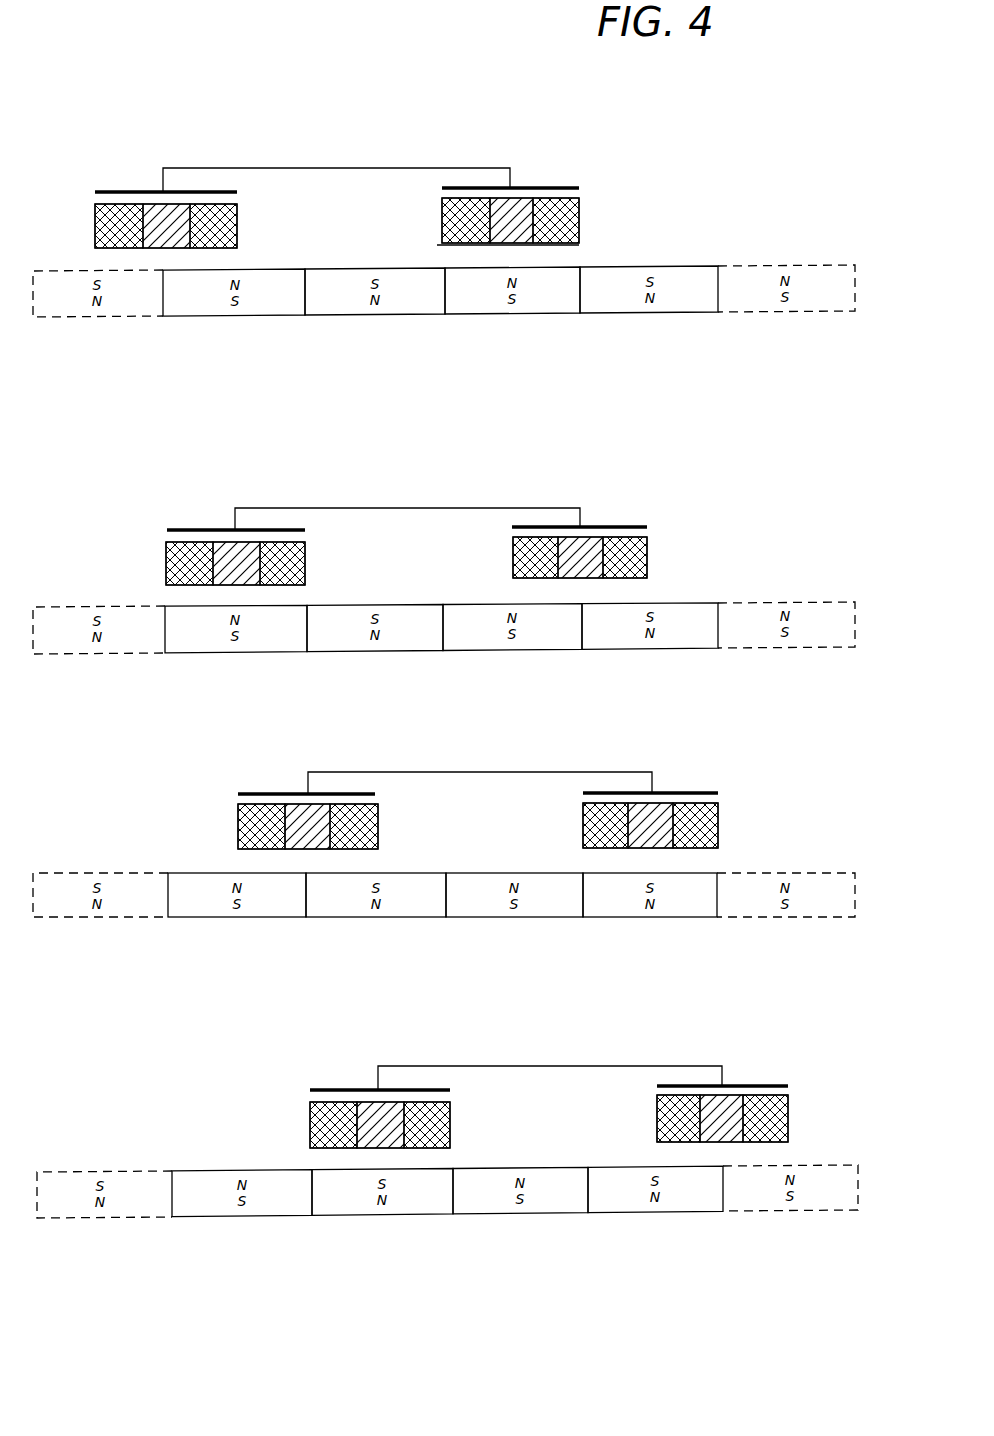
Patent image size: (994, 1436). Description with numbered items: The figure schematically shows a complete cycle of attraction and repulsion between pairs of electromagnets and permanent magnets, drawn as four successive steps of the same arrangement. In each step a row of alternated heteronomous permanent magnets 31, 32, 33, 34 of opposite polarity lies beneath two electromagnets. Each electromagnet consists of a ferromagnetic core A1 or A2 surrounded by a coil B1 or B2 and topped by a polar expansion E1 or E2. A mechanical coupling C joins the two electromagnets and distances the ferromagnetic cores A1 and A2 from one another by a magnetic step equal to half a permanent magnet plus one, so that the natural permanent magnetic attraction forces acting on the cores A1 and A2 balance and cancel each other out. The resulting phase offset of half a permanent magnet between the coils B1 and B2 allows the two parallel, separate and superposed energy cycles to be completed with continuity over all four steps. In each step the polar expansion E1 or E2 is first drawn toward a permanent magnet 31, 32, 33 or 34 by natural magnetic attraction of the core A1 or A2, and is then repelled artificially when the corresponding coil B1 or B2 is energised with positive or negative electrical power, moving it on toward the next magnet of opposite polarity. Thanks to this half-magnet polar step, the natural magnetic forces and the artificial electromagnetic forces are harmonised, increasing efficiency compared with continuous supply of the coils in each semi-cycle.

The permanent magnet 31 is at (210, 317).
The permanent magnet 32 is at (358, 316).
The permanent magnet 33 is at (517, 312).
The permanent magnet 34 is at (663, 311).
The mechanical coupling C is at (317, 168).
The polar expansion E1 is at (133, 191).
The polar expansion E2 is at (472, 185).
The ferromagnetic core A1 is at (163, 217).
The ferromagnetic core A2 is at (512, 208).
The coil B1 is at (253, 606).
The coil B2 is at (648, 639).